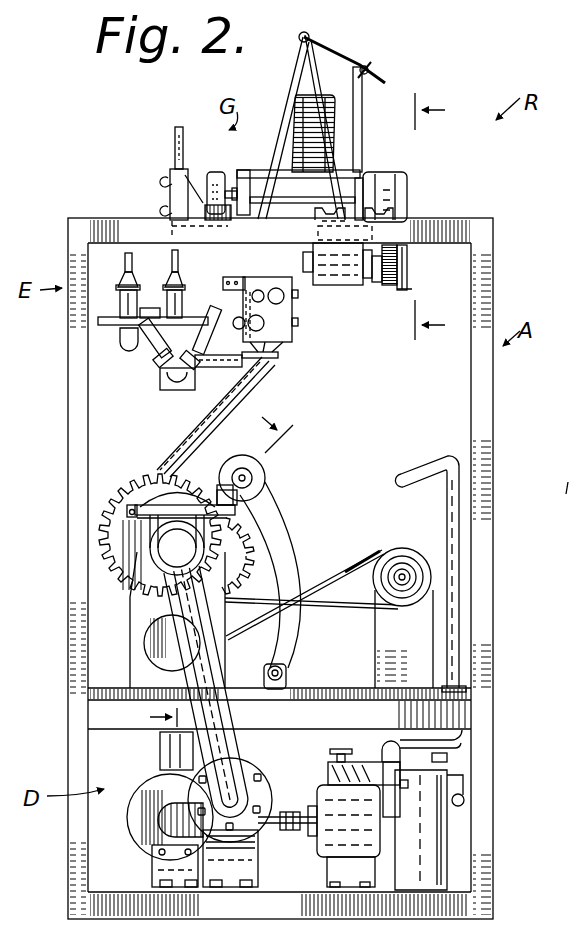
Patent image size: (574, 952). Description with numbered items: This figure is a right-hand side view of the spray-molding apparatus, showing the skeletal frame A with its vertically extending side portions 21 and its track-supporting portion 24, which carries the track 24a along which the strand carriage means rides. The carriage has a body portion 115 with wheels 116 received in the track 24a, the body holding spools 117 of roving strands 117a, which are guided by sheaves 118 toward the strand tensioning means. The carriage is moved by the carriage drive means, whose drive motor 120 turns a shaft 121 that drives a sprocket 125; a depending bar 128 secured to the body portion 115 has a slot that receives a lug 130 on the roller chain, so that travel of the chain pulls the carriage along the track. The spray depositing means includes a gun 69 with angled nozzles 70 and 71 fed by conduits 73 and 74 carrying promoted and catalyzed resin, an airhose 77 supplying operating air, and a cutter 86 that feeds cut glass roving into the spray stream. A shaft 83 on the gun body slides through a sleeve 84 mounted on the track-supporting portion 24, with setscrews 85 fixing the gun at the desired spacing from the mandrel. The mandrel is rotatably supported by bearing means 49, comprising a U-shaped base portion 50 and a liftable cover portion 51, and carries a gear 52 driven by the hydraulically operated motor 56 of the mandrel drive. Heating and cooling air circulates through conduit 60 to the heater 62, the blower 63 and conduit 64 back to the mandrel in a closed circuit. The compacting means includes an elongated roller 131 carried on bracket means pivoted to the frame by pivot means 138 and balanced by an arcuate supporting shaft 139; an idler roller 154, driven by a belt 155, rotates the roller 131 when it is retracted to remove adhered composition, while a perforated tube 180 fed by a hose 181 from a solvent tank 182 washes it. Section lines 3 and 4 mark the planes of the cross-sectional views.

The vertically extending side portions 21 is at (68, 480).
The track-supporting portion 24 is at (433, 228).
The track 24a is at (213, 226).
The shaft 83 is at (175, 138).
The setscrews 85 is at (168, 182).
The sleeve 84 is at (170, 196).
The wheels 116 is at (228, 158).
The body portion 115 is at (357, 172).
The spools 117 is at (320, 116).
The sheaves 118 is at (298, 39).
The drive motor 120 is at (338, 287).
The shaft 121 is at (368, 285).
The sprocket 125 is at (398, 254).
The lug 130 is at (410, 281).
The depending bar 128 is at (404, 289).
The conduit 74 is at (133, 262).
The conduit 73 is at (180, 264).
The gun 69 is at (142, 392).
The airhose 77 is at (112, 327).
The nozzle 70 is at (162, 367).
The cutter 86 is at (165, 389).
The nozzle 71 is at (197, 378).
The bearing means 49 is at (157, 466).
The roving strands 117a is at (245, 396).
The gear 52 is at (140, 478).
The cover portion 51 is at (183, 498).
The U-shaped base portion 50 is at (208, 578).
The motor 56 is at (157, 633).
The conduit 64 is at (233, 743).
The elongated roller 131 is at (265, 480).
The arcuate supporting shaft 139 is at (293, 632).
The pivot means 138 is at (285, 674).
The belt 155 is at (349, 558).
The idler roller 154 is at (436, 528).
The perforated tube 180 is at (400, 480).
The conduit 60 is at (160, 749).
The heater 62 is at (143, 838).
The blower 63 is at (252, 848).
The tank 182 is at (440, 849).
The hose 181 is at (470, 738).
The section line 3 is at (210, 567).
The section line 4 is at (441, 217).